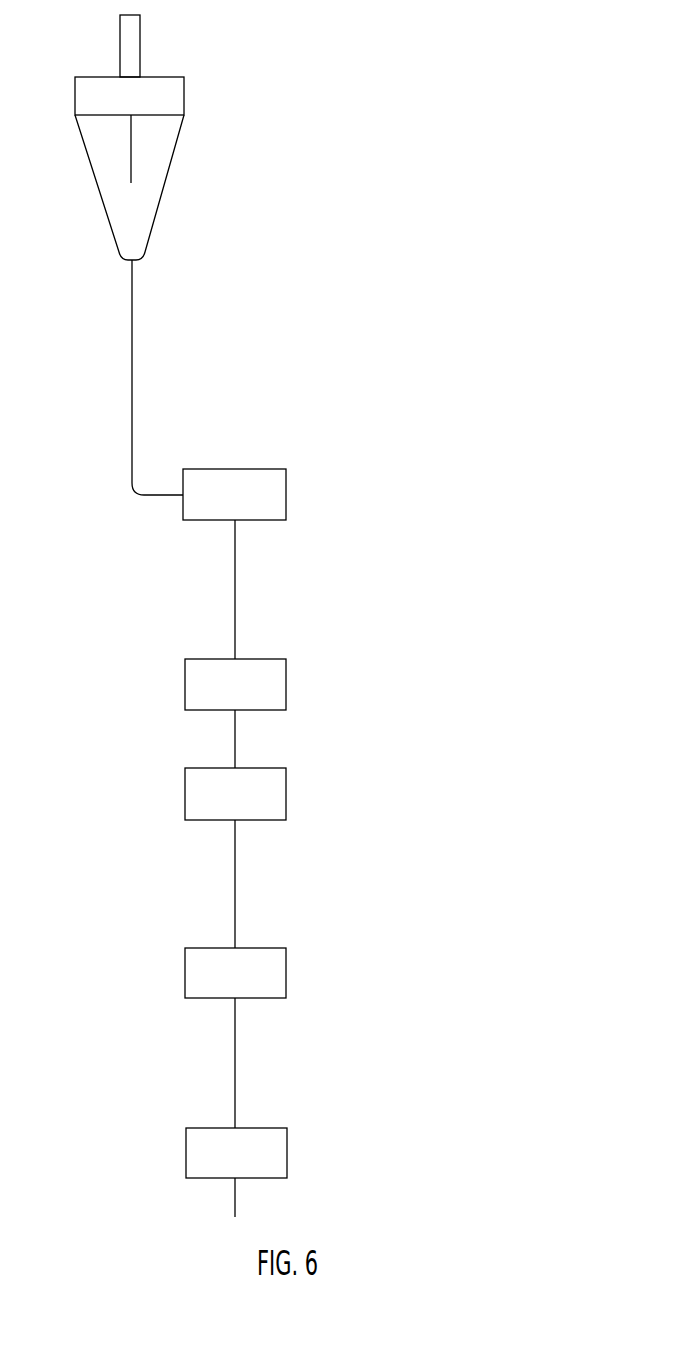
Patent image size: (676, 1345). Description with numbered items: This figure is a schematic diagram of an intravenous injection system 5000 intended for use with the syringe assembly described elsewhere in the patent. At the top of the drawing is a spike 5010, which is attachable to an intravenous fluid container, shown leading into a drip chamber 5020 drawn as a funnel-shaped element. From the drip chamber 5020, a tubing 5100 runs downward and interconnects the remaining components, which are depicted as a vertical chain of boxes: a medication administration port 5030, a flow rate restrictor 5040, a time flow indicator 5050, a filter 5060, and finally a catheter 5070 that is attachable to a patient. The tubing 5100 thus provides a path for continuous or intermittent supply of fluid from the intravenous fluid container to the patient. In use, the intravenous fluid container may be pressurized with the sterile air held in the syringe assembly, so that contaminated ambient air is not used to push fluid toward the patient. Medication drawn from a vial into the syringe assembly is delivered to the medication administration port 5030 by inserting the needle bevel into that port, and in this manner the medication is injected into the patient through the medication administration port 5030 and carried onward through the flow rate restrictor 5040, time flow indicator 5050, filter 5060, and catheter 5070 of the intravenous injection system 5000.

The intravenous injection system 5000 is at (427, 196).
The spike 5010 is at (132, 50).
The drip chamber 5020 is at (172, 165).
The tubing 5100 is at (133, 378).
The medication administration port 5030 is at (287, 495).
The flow rate restrictor 5040 is at (286, 688).
The time flow indicator 5050 is at (286, 800).
The filter 5060 is at (286, 973).
The catheter 5070 is at (287, 1153).